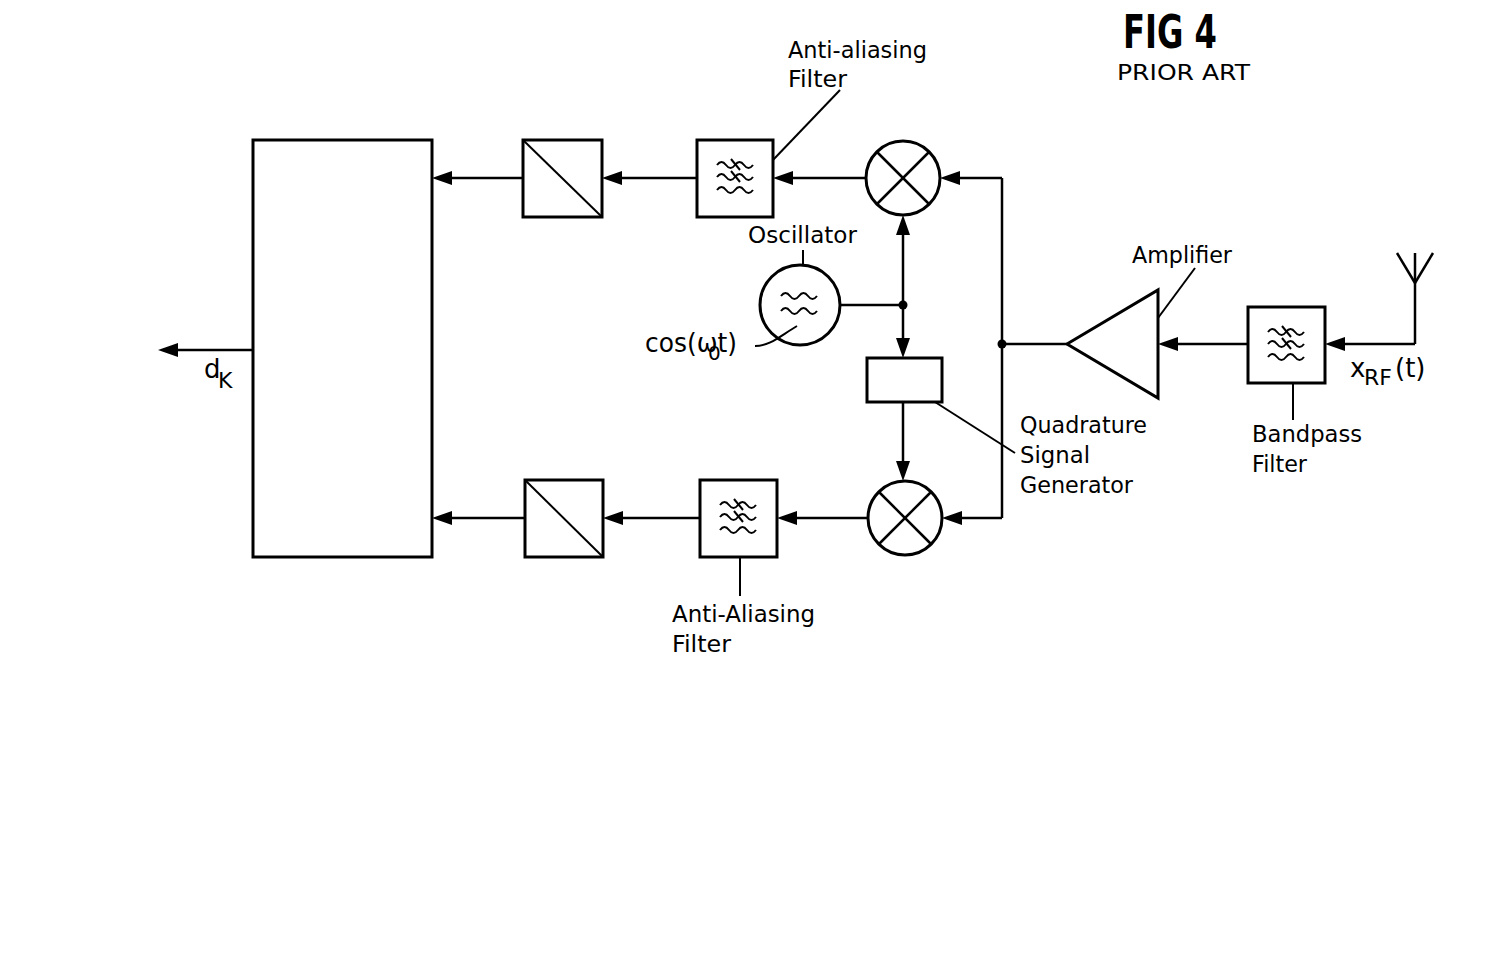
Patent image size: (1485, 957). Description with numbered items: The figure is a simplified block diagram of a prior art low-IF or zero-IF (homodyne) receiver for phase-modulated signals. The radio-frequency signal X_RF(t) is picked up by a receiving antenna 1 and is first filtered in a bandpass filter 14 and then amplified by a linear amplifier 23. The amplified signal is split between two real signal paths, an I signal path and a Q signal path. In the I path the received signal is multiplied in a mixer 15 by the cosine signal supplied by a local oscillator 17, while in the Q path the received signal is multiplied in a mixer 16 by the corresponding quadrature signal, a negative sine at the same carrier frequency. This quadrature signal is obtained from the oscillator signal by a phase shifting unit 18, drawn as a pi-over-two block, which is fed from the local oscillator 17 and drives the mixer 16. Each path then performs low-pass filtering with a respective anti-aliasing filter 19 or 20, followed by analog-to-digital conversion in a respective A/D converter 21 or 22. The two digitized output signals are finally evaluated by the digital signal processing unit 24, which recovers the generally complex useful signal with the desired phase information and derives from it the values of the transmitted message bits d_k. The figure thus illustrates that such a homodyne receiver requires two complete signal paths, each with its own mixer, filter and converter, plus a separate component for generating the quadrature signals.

The receiving antenna 1 is at (1430, 268).
The bandpass filter 14 is at (1288, 307).
The mixer 15 is at (903, 141).
The mixer 16 is at (885, 488).
The local oscillator 17 is at (762, 286).
The phase shifting unit 18 is at (925, 358).
The anti-aliasing filter 19 is at (737, 140).
The anti-aliasing filter 20 is at (740, 480).
The A/D converter 21 is at (562, 140).
The A/D converter 22 is at (566, 480).
The linear amplifier 23 is at (1113, 313).
The digital signal processing unit 24 is at (341, 140).